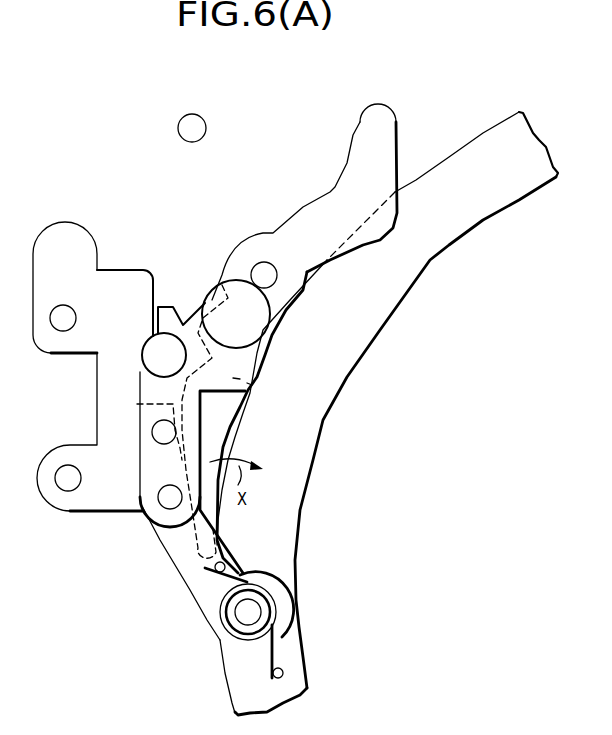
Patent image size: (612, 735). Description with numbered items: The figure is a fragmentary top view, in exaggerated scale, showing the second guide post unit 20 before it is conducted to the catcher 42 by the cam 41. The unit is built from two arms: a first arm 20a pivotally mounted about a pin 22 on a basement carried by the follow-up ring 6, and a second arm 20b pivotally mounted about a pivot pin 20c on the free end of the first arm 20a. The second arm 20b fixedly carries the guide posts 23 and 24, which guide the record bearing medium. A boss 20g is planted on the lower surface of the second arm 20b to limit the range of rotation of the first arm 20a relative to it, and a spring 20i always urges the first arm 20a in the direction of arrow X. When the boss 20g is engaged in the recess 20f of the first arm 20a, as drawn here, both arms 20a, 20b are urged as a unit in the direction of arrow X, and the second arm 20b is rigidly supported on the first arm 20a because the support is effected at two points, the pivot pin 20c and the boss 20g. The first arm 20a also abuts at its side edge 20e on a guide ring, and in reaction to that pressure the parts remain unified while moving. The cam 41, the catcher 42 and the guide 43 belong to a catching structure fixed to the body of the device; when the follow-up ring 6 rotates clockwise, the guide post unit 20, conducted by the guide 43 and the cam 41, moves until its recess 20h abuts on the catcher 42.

The follow-up ring 6 is at (481, 143).
The second guide post unit 20 is at (173, 549).
The first arm 20a is at (210, 580).
The second arm 20b is at (247, 383).
The pivot pin 20c is at (160, 500).
The side edge 20e is at (233, 378).
The recess 20f is at (137, 404).
The boss 20g is at (152, 433).
The recess 20h is at (182, 312).
The spring 20i is at (273, 657).
The pin 22 is at (240, 613).
The guide post 23 is at (253, 320).
The guide post 24 is at (165, 347).
The cam 41 is at (381, 123).
The catcher 42 is at (203, 125).
The guide 43 is at (68, 230).